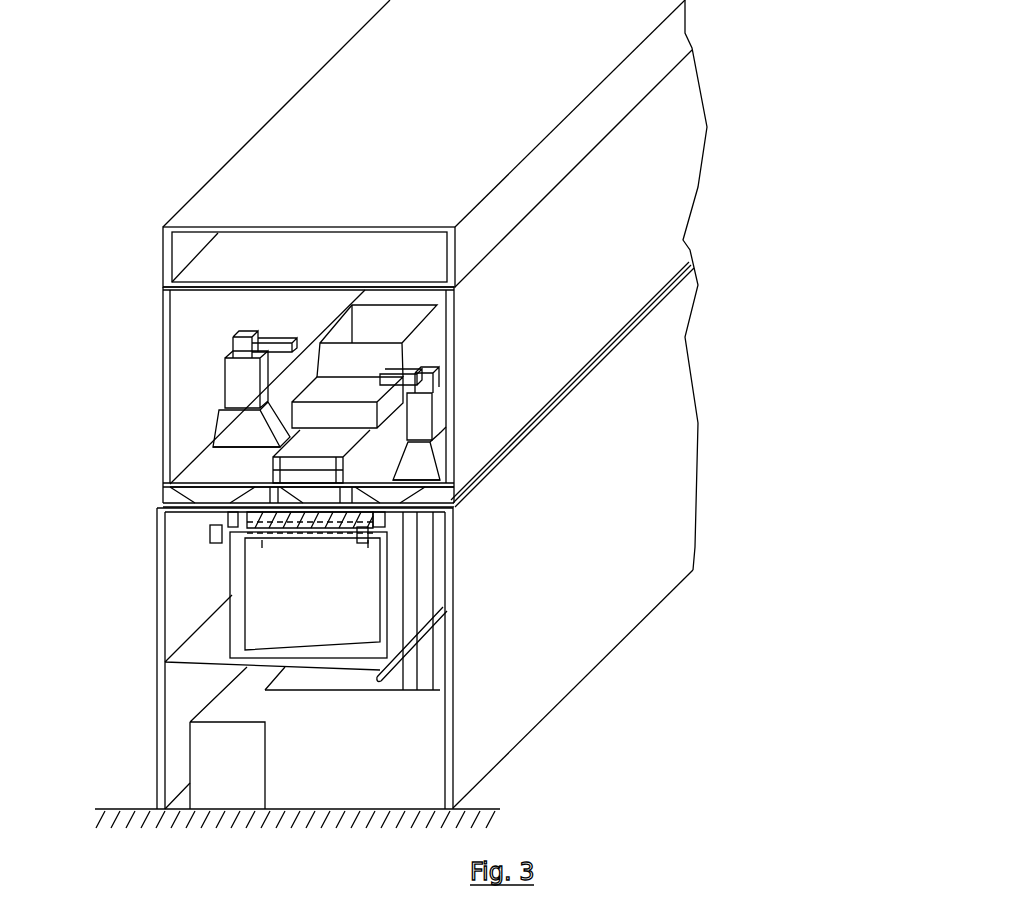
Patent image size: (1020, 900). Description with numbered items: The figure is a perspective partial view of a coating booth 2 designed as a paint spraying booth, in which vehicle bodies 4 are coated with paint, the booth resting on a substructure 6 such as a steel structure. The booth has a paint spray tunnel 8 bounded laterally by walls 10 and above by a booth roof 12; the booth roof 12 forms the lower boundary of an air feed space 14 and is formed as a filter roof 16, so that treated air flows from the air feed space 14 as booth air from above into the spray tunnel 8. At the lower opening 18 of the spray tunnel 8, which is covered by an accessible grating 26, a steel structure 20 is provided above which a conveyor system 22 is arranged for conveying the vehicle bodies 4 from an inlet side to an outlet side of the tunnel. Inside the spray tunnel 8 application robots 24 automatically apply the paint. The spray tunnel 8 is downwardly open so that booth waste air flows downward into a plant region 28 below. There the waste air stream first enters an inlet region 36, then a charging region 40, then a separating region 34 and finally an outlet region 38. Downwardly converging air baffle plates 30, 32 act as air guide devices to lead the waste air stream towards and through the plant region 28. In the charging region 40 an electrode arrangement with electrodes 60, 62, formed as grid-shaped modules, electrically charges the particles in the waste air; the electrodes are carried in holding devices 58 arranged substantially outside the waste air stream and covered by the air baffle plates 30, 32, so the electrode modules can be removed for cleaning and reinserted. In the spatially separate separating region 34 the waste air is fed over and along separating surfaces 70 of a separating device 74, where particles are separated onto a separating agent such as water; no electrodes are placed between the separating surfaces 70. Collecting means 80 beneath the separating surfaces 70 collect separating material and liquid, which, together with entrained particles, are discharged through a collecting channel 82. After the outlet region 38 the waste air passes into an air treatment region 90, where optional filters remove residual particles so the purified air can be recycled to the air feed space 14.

The coating booth 2 is at (115, 132).
The vehicle body 4 is at (410, 323).
The substructure 6 is at (150, 491).
The paint spray tunnel 8 is at (298, 317).
The wall 10 is at (637, 230).
The booth roof 12 is at (330, 283).
The air feed space 14 is at (252, 272).
The filter roof 16 is at (303, 287).
The lower opening 18 is at (156, 488).
The steel structure 20 is at (228, 451).
The conveyor system 22 is at (370, 445).
The application robot 24 is at (222, 354).
The grating 26 is at (445, 483).
The plant region 28 is at (116, 610).
The air baffle plate 30 is at (218, 487).
The air baffle plate 32 is at (377, 503).
The separating region 34 is at (146, 575).
The inlet region 36 is at (146, 507).
The outlet region 38 is at (141, 664).
The charging region 40 is at (146, 520).
The holding device 58 is at (228, 518).
The electrode 60 is at (360, 510).
The electrode 62 is at (240, 564).
The separating surface 70 is at (437, 600).
The separating device 74 is at (204, 630).
The collecting means 80 is at (213, 647).
The collecting channel 82 is at (380, 676).
The air treatment region 90 is at (138, 725).